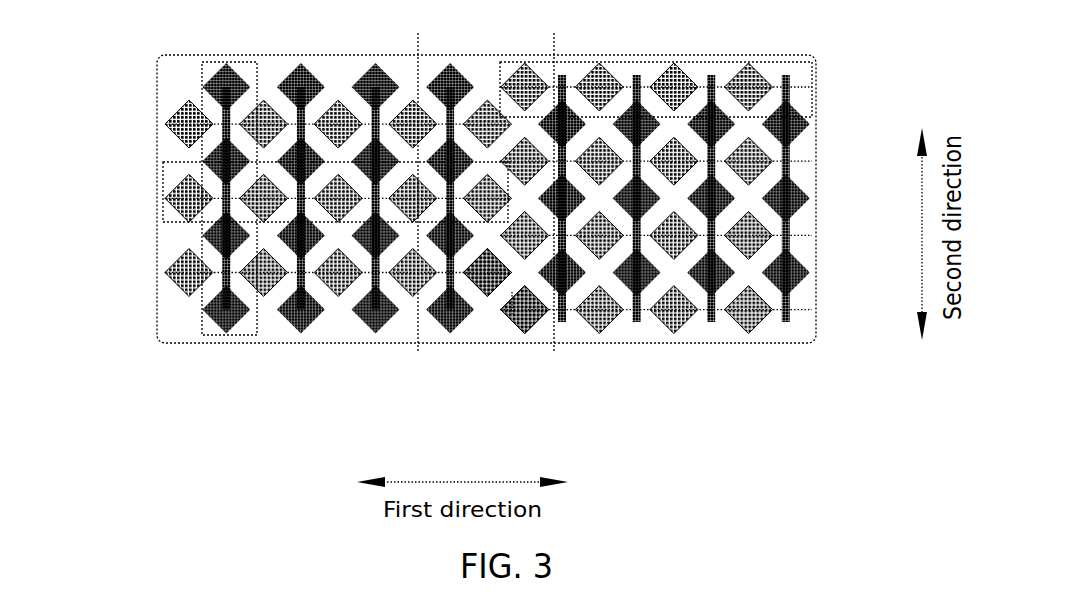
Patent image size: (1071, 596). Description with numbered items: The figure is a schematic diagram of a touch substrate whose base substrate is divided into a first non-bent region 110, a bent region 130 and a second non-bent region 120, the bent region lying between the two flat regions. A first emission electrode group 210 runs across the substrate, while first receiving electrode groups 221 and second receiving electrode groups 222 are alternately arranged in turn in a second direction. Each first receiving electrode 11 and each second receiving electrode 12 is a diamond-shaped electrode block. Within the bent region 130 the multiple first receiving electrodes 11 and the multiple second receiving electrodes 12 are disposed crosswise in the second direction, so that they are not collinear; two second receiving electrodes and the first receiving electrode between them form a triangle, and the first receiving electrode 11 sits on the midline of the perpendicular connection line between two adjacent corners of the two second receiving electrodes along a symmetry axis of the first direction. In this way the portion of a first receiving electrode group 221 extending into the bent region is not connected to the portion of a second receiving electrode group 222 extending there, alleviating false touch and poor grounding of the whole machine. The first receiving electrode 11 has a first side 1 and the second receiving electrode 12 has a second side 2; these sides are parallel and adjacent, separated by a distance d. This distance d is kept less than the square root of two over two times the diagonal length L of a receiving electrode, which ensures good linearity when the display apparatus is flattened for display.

The first non-bent region 110 is at (417, 352).
The bent region 130 is at (552, 352).
The second non-bent region 120 is at (813, 353).
The first emission electrode group 210 is at (200, 84).
The first receiving electrode group 221 is at (163, 183).
The second receiving electrode group 222 is at (813, 77).
The first side 1 is at (496, 293).
The first receiving electrode 11 is at (487, 273).
The second side 2 is at (525, 317).
The second receiving electrode 12 is at (525, 310).
The side length of electrode L is at (525, 87).
The distance d is at (520, 288).